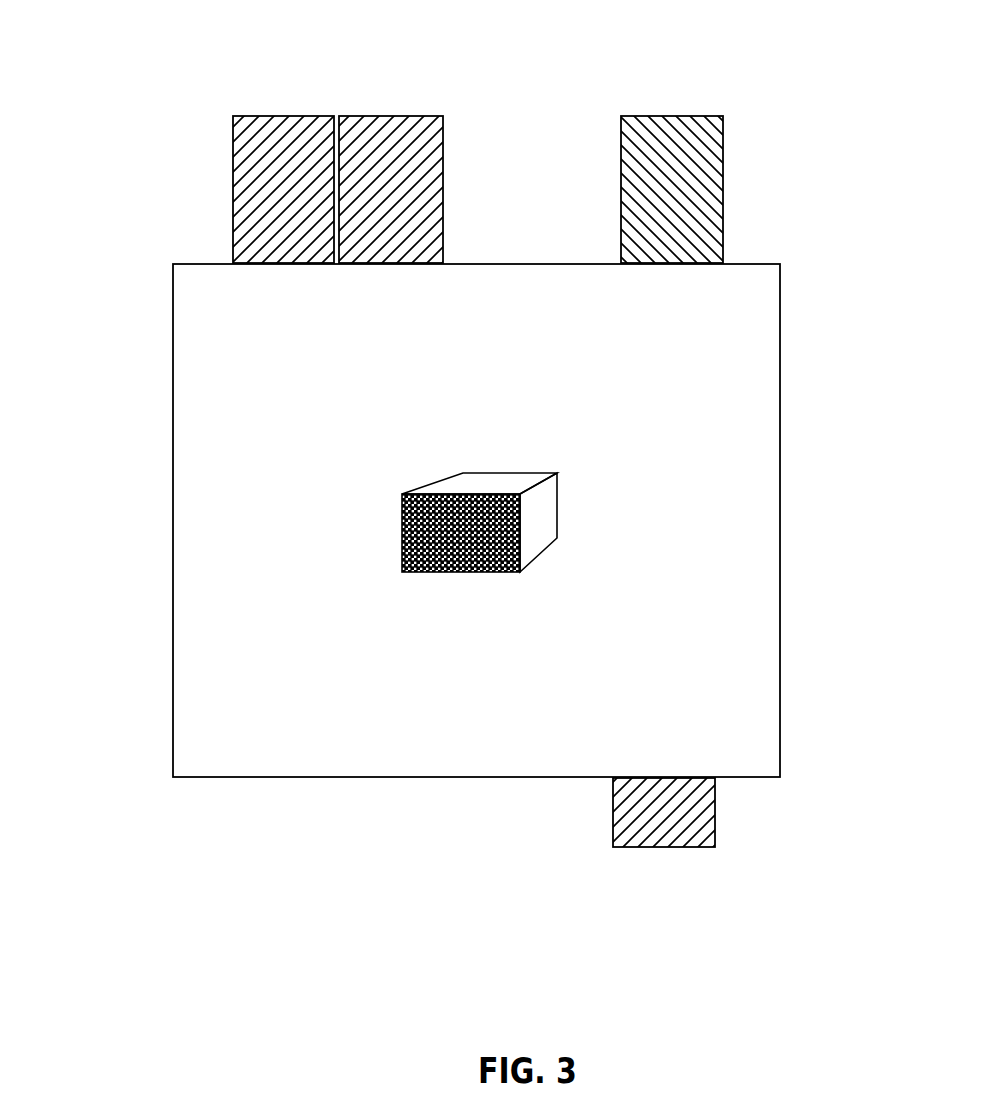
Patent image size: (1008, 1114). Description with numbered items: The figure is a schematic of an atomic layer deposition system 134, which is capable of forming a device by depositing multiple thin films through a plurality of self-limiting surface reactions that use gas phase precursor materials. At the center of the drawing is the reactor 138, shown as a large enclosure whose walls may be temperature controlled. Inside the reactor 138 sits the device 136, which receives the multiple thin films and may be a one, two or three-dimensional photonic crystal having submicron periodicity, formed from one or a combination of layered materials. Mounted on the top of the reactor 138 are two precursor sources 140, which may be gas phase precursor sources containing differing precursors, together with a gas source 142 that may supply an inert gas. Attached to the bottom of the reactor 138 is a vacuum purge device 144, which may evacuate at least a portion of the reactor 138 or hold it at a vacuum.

The system 134 is at (160, 225).
The device 136 is at (572, 490).
The reactor 138 is at (780, 303).
The precursor source 140 is at (490, 73).
The gas source 142 is at (723, 147).
The vacuum purge device 144 is at (777, 858).